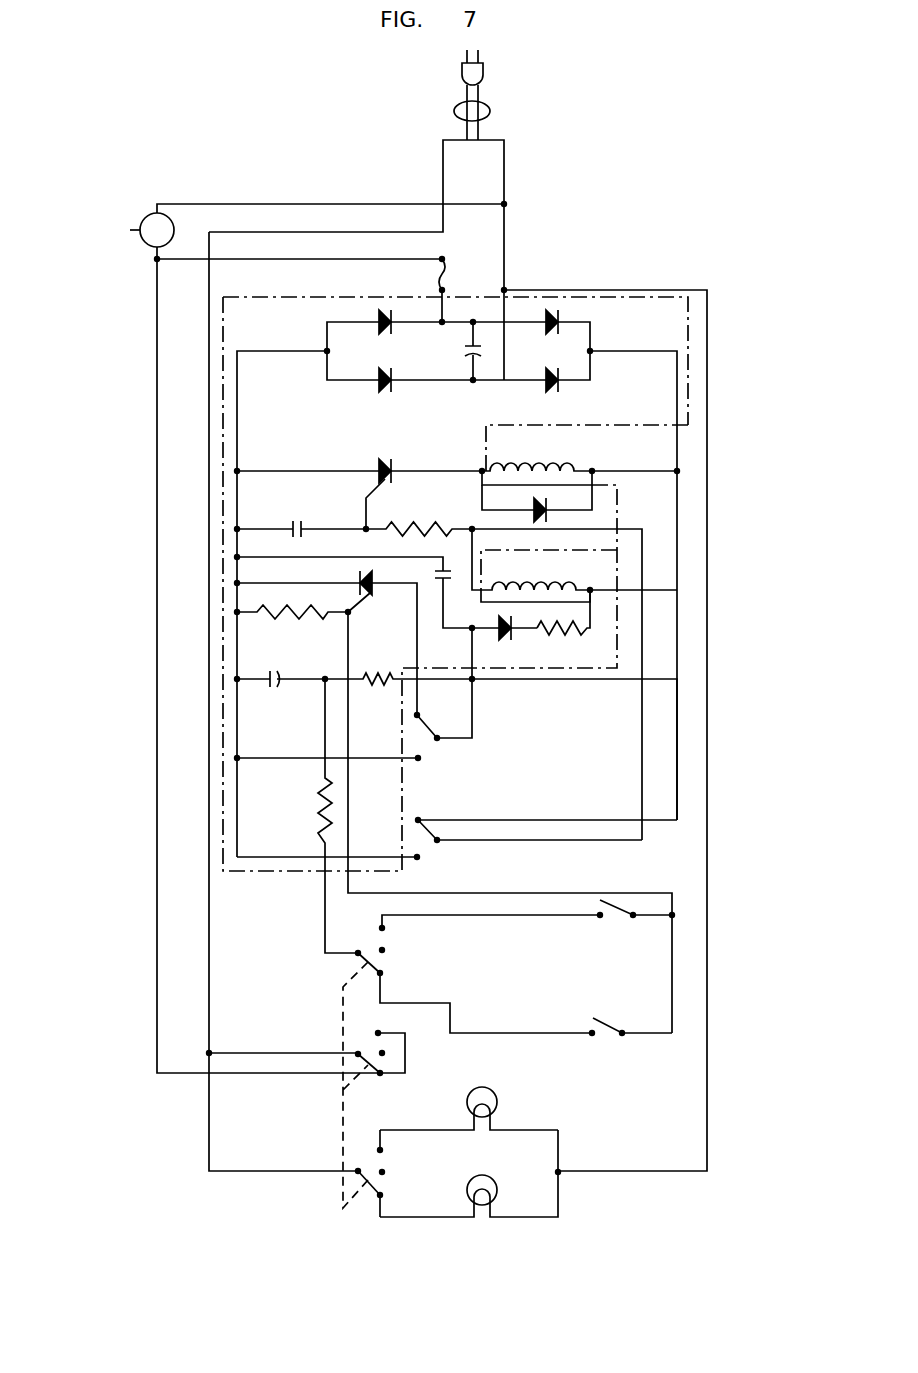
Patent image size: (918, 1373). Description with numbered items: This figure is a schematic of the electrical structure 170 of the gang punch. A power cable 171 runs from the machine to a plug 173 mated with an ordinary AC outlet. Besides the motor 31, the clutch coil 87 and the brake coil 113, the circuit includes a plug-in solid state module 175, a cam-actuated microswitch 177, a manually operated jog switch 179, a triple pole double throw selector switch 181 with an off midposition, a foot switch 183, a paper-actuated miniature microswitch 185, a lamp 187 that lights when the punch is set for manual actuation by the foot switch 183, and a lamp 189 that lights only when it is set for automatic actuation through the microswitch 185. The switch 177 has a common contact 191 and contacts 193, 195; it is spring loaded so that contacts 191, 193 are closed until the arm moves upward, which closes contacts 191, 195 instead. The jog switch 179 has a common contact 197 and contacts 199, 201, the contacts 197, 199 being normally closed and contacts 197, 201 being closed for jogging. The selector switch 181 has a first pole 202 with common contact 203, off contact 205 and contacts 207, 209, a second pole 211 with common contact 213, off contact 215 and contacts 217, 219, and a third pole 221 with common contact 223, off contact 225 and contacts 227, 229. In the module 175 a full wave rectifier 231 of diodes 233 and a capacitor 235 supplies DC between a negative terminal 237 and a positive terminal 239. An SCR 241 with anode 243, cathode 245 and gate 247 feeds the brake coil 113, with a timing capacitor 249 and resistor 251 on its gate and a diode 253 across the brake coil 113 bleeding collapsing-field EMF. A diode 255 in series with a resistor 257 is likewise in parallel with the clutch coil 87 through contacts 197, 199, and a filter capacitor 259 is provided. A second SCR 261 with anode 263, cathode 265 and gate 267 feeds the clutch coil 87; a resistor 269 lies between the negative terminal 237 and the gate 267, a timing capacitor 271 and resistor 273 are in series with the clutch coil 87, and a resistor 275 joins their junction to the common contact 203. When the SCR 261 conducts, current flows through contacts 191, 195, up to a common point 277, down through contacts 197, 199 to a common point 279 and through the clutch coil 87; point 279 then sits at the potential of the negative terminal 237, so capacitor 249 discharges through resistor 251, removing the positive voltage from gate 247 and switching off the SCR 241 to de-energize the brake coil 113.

The motor 31 is at (140, 229).
The electrical structure 170 is at (756, 126).
The power cable 171 is at (490, 111).
The plug 173 is at (478, 72).
The plug in module 175 is at (683, 297).
The full wave rectifier circuit 231 is at (577, 315).
The diodes 233 is at (383, 328).
The capacitor 235 is at (468, 352).
The negative terminal 237 is at (323, 355).
The positive terminal 239 is at (593, 351).
The silicon controlled rectifier 241 is at (358, 480).
The anode 243 is at (390, 463).
The cathode 245 is at (378, 464).
The gate 247 is at (380, 480).
The capacitor 249 is at (292, 524).
The resistor 251 is at (405, 537).
The diode 253 is at (536, 510).
The brake coil 113 is at (558, 463).
The common point 279 is at (478, 531).
The clutch coil 87 is at (565, 586).
The filter capacitor 259 is at (460, 544).
The silicon controlled rectifier 261 is at (453, 795).
The anode 263 is at (373, 580).
The cathode 265 is at (358, 580).
The gate 267 is at (362, 592).
The resistor 269 is at (312, 616).
The capacitor 271 is at (287, 692).
The resistor 273 is at (387, 690).
The resistor 275 is at (322, 838).
The common point 277 is at (478, 682).
The diode 255 is at (510, 640).
The resistor 257 is at (560, 635).
The cam-actuated microswitch 177 is at (399, 739).
The jog switch 179 is at (457, 835).
The common contact 191 is at (440, 741).
The contact 193 is at (418, 762).
The contact 195 is at (419, 714).
The common contact 197 is at (441, 840).
The contact 199 is at (421, 817).
The contact 201 is at (421, 858).
The miniature microswitch 185 is at (608, 934).
The foot switch 183 is at (616, 1058).
The selector switch 181 is at (343, 1115).
The first pole 202 is at (321, 958).
The common contact 203 is at (355, 957).
The off contact 205 is at (386, 950).
The contact 207 is at (386, 928).
The contact 209 is at (385, 973).
The second pole 211 is at (338, 1043).
The common contact 213 is at (358, 1052).
The off contact 215 is at (386, 1053).
The contact 217 is at (381, 1032).
The contact 219 is at (385, 1078).
The third pole 221 is at (362, 1200).
The common contact 223 is at (355, 1172).
The off contact 225 is at (385, 1172).
The contact 227 is at (383, 1150).
The contact 229 is at (383, 1196).
The lamp 187 is at (470, 1193).
The lamp 189 is at (497, 1103).